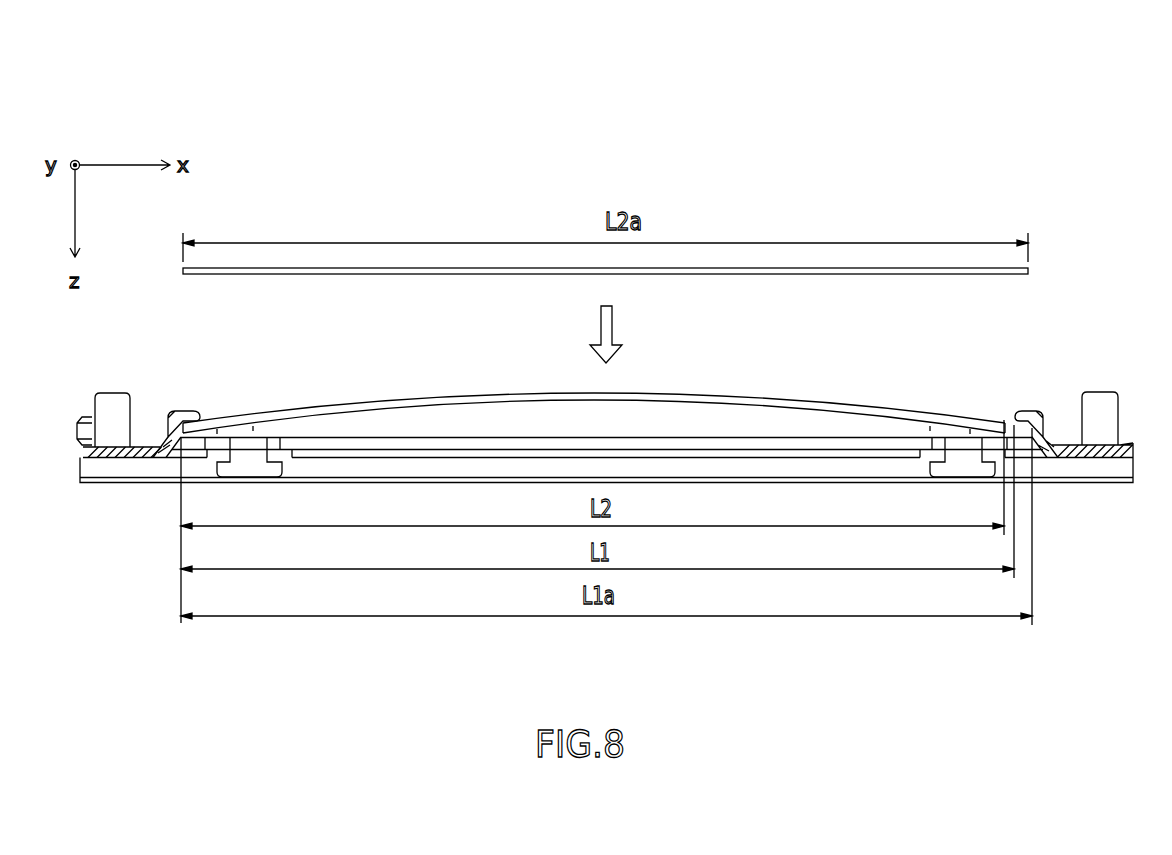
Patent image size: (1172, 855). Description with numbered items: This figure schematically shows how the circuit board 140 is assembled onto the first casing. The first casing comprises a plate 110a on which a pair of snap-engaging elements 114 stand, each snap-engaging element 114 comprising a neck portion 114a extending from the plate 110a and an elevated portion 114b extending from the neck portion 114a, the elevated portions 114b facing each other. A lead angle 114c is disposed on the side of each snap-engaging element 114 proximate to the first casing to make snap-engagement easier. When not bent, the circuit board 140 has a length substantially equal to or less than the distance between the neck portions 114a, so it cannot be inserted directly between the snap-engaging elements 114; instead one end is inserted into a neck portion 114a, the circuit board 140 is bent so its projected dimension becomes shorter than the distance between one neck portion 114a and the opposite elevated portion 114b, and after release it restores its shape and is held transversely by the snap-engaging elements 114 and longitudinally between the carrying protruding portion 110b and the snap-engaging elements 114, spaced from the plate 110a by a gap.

The circuit board 140 is at (1029, 271).
The plate 110a is at (122, 470).
The carrying protruding portion 110b is at (150, 453).
The snap-engaging element 114 is at (112, 732).
The neck portion 114a is at (160, 450).
The elevated portion 114b is at (177, 411).
The lead angle 114c is at (200, 412).